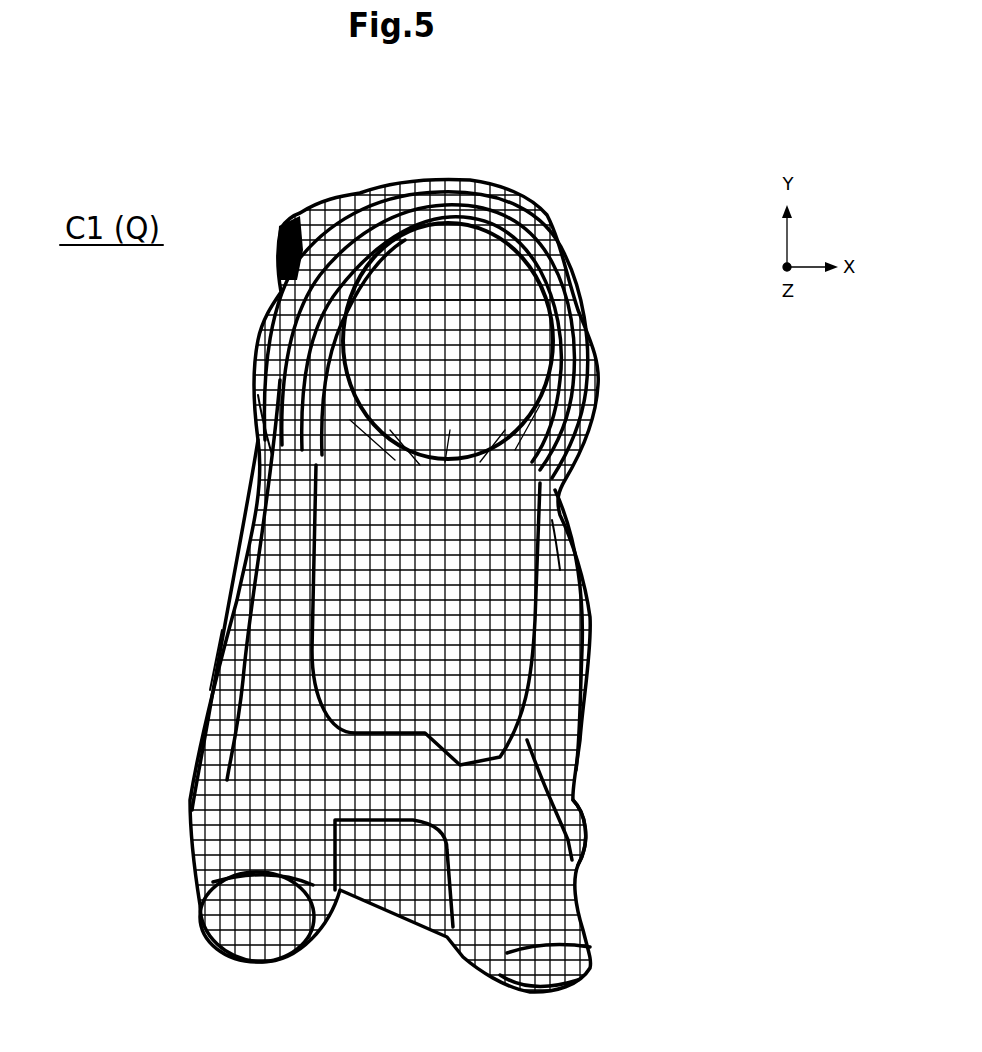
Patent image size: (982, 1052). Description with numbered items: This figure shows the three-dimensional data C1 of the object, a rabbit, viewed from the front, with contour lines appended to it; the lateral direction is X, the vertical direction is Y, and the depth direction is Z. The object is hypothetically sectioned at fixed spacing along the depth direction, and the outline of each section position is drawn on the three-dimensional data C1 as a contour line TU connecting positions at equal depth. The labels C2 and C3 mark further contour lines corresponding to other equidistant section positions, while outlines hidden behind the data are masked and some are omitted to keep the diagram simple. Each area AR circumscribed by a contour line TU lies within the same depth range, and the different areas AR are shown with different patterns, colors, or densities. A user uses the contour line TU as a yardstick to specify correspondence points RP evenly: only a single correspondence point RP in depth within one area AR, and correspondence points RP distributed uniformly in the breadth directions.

The three-dimensional data C1 is at (594, 294).
The second contour (outer head, hands and feet) C2 is at (616, 395).
The third contour (body and arm region) C3 is at (607, 628).
The area AR is at (264, 432).
The contour line TU is at (562, 553).
The correspondence point RP is at (212, 680).